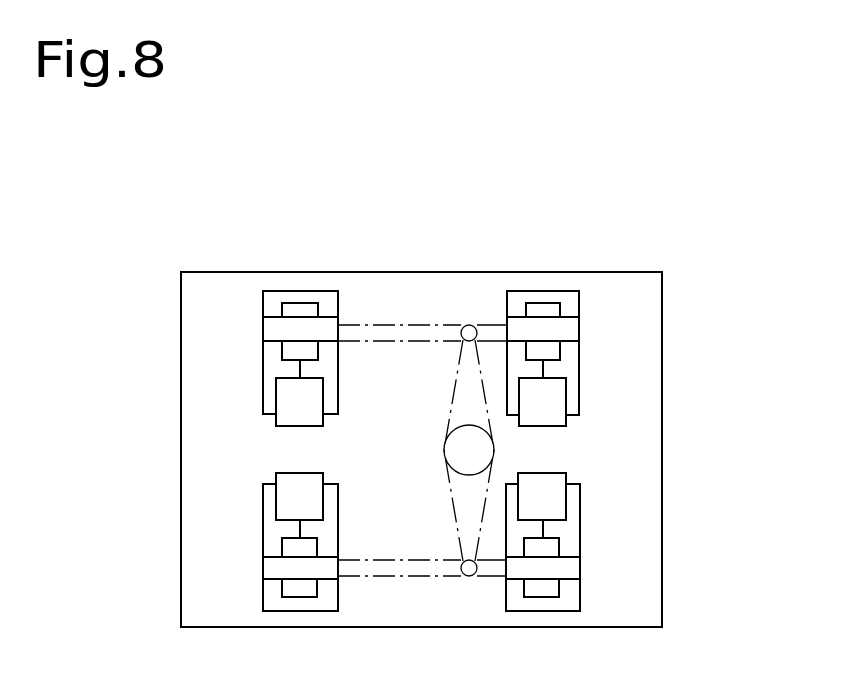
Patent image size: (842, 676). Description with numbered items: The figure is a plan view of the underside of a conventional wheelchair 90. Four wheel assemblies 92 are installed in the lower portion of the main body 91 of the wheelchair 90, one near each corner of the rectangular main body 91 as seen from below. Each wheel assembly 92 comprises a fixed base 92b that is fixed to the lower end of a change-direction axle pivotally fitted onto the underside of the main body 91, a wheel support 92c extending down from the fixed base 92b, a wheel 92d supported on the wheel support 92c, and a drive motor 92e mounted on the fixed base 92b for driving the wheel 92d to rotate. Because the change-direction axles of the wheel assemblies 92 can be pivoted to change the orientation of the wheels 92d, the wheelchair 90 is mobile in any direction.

The wheelchair 90 is at (171, 214).
The main body 91 is at (220, 285).
The wheel assembly 92 is at (236, 357).
The fixed base 92b is at (567, 300).
The wheel support 92c is at (530, 302).
The wheel 92d is at (568, 333).
The drive motor 92e is at (556, 400).